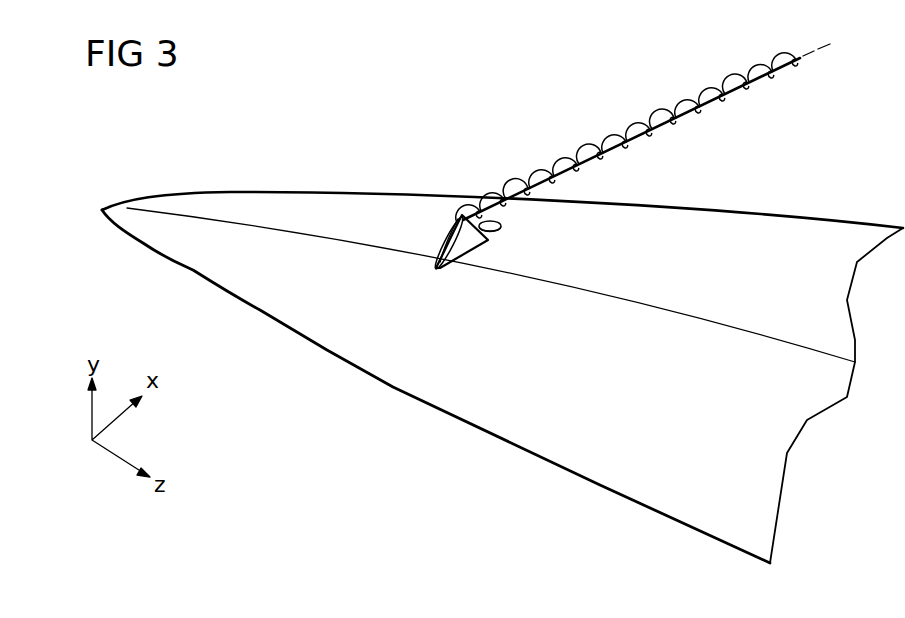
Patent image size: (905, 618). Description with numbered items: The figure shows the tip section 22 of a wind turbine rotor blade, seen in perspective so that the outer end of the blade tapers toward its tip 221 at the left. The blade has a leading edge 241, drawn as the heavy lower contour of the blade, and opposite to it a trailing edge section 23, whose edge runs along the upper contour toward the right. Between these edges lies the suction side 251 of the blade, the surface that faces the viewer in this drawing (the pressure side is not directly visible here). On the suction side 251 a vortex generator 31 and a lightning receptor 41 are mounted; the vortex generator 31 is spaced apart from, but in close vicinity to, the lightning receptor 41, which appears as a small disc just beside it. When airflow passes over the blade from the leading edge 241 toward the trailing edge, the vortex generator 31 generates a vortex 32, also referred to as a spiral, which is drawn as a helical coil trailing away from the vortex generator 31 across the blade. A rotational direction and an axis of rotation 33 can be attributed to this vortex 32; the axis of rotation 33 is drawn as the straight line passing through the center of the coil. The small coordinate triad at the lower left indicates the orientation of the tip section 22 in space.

The tip section 22 is at (393, 176).
The leading edge tip 221 is at (103, 204).
The trailing edge section 23 is at (740, 215).
The leading edge 241 is at (385, 384).
The suction side 251 is at (768, 352).
The vortex generator 31 is at (468, 260).
The vortex 32 is at (623, 132).
The axis of rotation 33 is at (677, 128).
The lightning receptor 41 is at (502, 225).